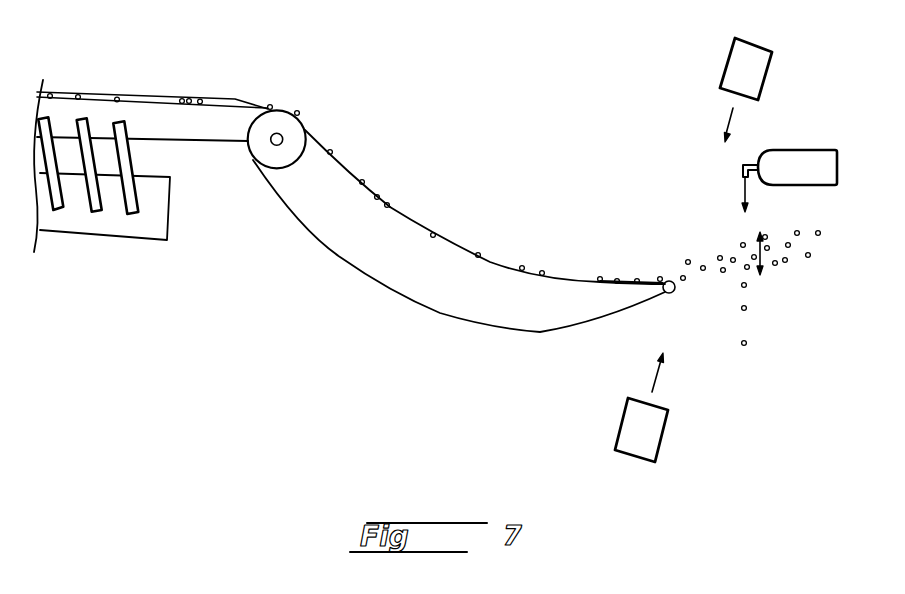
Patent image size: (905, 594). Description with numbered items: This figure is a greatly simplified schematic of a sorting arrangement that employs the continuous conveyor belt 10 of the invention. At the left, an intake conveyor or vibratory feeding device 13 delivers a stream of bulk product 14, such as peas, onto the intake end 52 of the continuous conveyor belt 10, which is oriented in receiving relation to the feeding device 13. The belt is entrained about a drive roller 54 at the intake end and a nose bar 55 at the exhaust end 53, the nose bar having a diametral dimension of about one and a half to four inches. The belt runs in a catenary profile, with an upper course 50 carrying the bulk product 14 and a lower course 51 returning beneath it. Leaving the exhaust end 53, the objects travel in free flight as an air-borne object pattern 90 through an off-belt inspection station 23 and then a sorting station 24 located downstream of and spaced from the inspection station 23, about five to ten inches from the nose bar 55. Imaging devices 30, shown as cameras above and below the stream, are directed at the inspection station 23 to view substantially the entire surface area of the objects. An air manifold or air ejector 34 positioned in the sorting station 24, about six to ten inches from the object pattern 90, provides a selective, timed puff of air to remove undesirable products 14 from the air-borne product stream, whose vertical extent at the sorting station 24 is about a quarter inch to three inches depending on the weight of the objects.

The continuous conveyor belt 10 is at (315, 268).
The intake conveyor or vibratory feeding device 13 is at (148, 98).
The bulk product 14 is at (366, 181).
The inspection station 23 is at (668, 242).
The sorting station 24 is at (726, 224).
The imaging devices 30 is at (770, 78).
The air manifold or air ejector 34 is at (818, 148).
The upper course 50 is at (453, 245).
The lower course 51 is at (392, 297).
The intake end 52 is at (315, 135).
The exhaust end 53 is at (648, 282).
The drive roller 54 is at (250, 127).
The nose bar 55 is at (668, 294).
The air-borne object pattern 90 is at (763, 255).